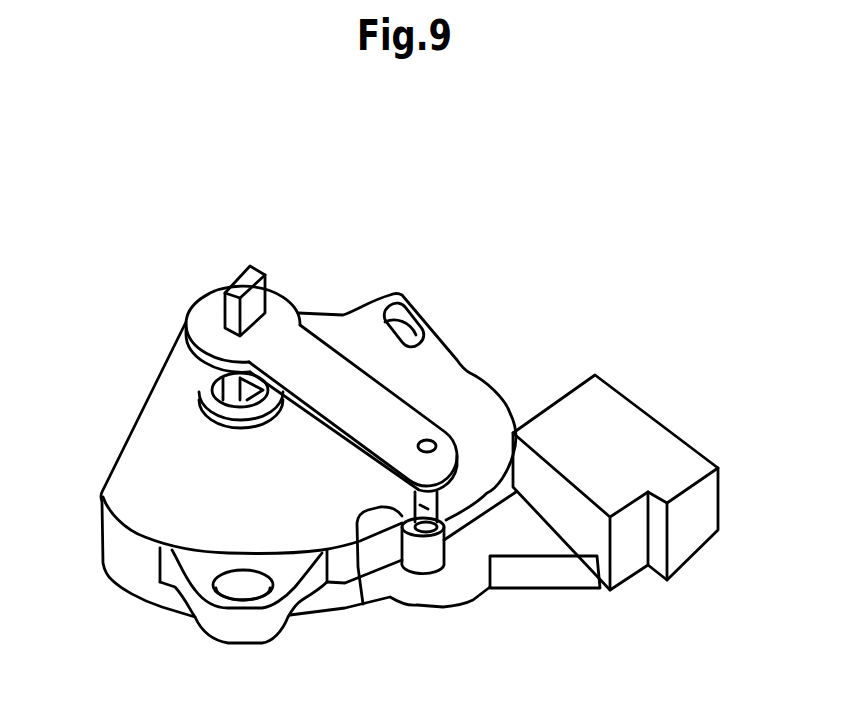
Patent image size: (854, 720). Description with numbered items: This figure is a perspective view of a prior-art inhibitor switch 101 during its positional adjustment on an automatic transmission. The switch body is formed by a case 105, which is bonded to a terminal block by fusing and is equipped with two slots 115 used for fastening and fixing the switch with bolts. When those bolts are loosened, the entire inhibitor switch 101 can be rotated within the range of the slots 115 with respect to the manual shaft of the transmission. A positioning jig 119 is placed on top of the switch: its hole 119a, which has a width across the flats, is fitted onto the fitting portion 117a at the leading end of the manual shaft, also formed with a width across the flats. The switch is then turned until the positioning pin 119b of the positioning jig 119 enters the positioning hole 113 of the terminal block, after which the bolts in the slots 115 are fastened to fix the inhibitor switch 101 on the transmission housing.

The inhibitor switch 101 is at (391, 427).
The case 105 is at (332, 432).
The positioning hole 113 is at (359, 612).
The slots 115 is at (163, 397).
The fitting portion 117a is at (226, 288).
The positioning jig 119 is at (342, 427).
The hole 119a is at (285, 300).
The positioning pin 119b is at (447, 510).